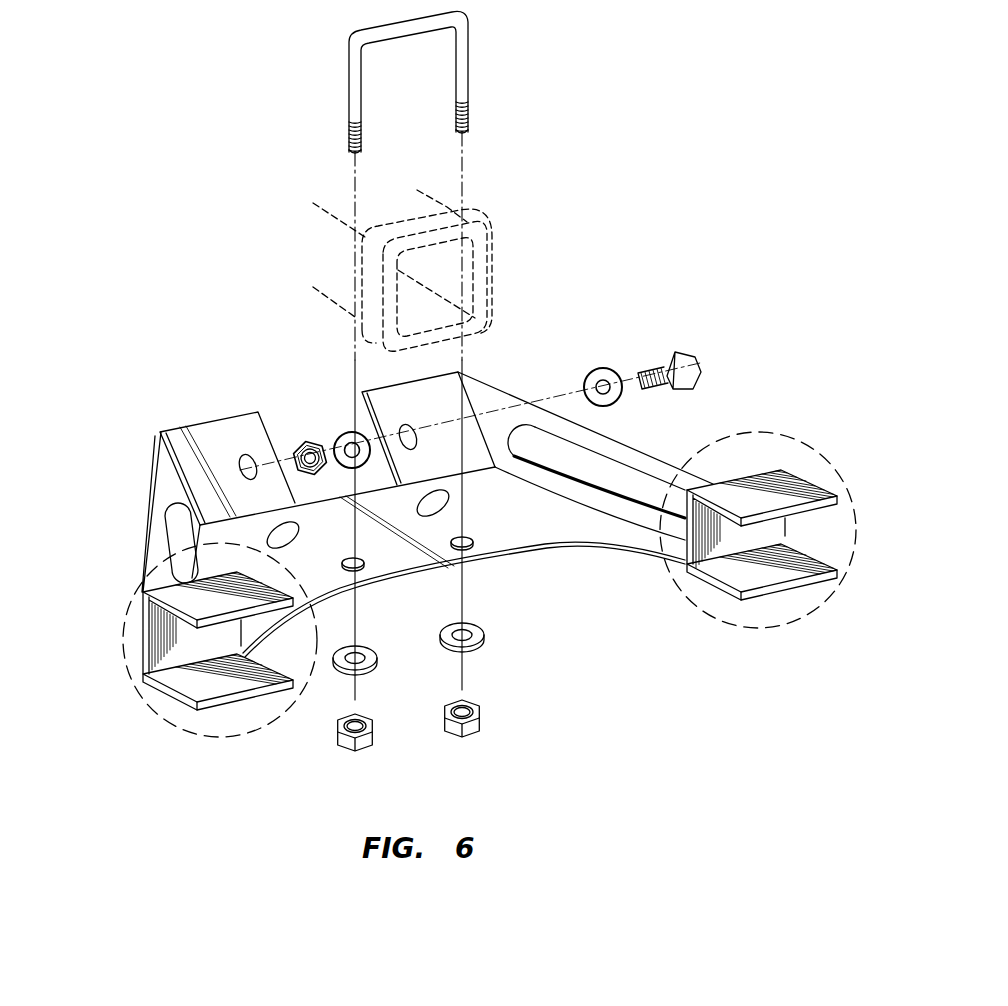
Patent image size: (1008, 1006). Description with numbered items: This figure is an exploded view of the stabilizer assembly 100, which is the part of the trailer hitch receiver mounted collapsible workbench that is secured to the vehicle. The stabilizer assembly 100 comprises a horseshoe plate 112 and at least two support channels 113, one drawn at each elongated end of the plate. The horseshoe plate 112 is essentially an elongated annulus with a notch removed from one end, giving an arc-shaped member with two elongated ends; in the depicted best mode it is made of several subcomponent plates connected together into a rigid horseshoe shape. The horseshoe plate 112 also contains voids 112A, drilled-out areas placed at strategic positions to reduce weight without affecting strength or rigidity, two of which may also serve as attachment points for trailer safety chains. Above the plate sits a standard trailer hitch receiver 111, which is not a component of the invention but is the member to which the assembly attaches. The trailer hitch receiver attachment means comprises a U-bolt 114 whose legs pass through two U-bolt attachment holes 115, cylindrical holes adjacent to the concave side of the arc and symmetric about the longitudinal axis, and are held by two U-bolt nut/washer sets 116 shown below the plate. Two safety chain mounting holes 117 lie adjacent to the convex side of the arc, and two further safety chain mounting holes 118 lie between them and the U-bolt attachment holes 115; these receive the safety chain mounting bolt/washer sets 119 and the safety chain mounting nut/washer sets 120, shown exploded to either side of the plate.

The stabilizer assembly 100 is at (760, 68).
The trailer hitch receiver 111 is at (493, 250).
The horseshoe plate 112 is at (505, 392).
The voids 112A is at (167, 530).
The support channels 113 is at (142, 698).
The U-bolt 114 is at (463, 40).
The U-bolt attachment holes 115 is at (440, 575).
The U-bolt nut/washer sets 116 is at (373, 633).
The safety chain mounting holes 117 is at (247, 461).
The safety chain mounting holes 118 is at (295, 526).
The safety chain mounting bolt/washer sets 119 is at (703, 358).
The safety chain mounting nut/washer sets 120 is at (380, 430).